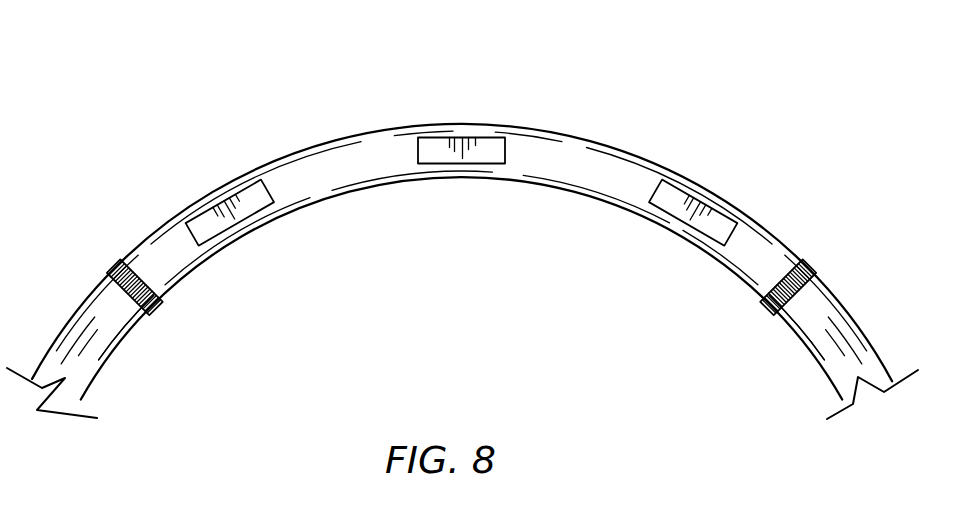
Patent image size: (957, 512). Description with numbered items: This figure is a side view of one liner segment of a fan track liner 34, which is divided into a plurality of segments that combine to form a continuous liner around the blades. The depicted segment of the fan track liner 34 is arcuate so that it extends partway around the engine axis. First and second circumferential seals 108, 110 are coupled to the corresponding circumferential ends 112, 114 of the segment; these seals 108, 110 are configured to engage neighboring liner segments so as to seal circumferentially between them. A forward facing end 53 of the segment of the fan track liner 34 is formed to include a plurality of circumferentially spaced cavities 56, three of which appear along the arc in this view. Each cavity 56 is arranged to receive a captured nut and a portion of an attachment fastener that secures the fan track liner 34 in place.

The fan track liner 34 is at (83, 292).
The forward facing end 53 is at (613, 192).
The cavity 56 is at (232, 190).
The first circumferential seal 108 is at (157, 312).
The second circumferential seal 110 is at (760, 308).
The circumferential end 112 is at (133, 258).
The circumferential end 114 is at (803, 268).